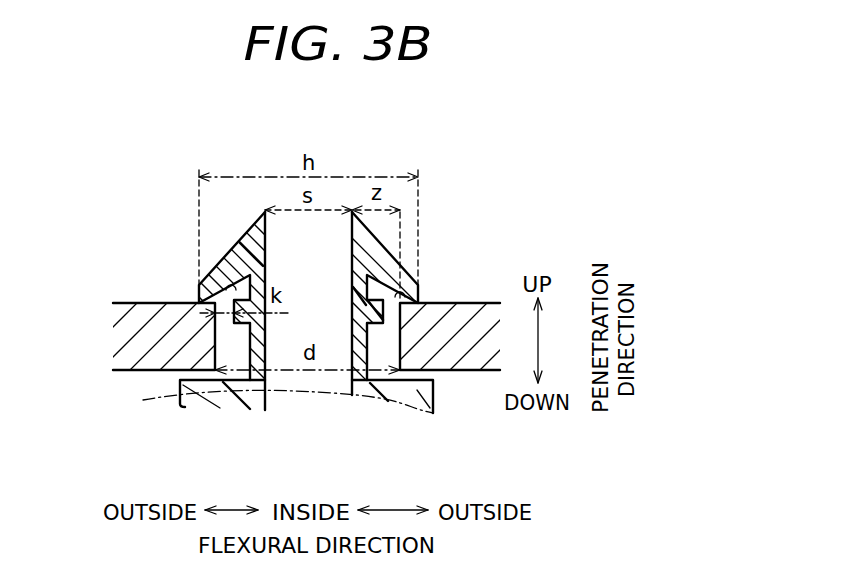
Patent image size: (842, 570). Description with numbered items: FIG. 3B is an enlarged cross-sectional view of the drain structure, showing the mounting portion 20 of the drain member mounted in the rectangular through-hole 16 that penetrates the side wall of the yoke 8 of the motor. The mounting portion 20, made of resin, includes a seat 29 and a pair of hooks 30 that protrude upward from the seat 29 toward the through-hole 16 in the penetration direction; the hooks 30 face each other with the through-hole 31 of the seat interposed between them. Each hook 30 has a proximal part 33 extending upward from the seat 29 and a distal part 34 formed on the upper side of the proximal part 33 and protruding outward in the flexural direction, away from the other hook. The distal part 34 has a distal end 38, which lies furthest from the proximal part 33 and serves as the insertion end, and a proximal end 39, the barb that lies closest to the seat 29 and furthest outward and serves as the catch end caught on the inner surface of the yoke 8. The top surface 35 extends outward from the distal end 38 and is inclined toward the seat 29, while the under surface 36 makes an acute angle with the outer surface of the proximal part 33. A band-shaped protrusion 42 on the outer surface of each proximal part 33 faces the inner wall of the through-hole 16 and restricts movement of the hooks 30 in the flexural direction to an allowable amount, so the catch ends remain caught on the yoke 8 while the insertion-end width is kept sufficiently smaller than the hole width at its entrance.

The yoke 8 is at (460, 350).
The mounting portion 20 is at (468, 197).
The distal end 38 is at (265, 207).
The top surface 35 is at (224, 248).
The distal part 34 is at (231, 260).
The under surface 36 is at (203, 280).
The proximal end 39 is at (192, 308).
The protrusion 42 is at (230, 320).
The proximal part 33 is at (252, 335).
The seat 29 is at (217, 408).
The through-hole 31 is at (281, 406).
The through-hole 16 is at (431, 302).
The hooks 30 is at (345, 268).